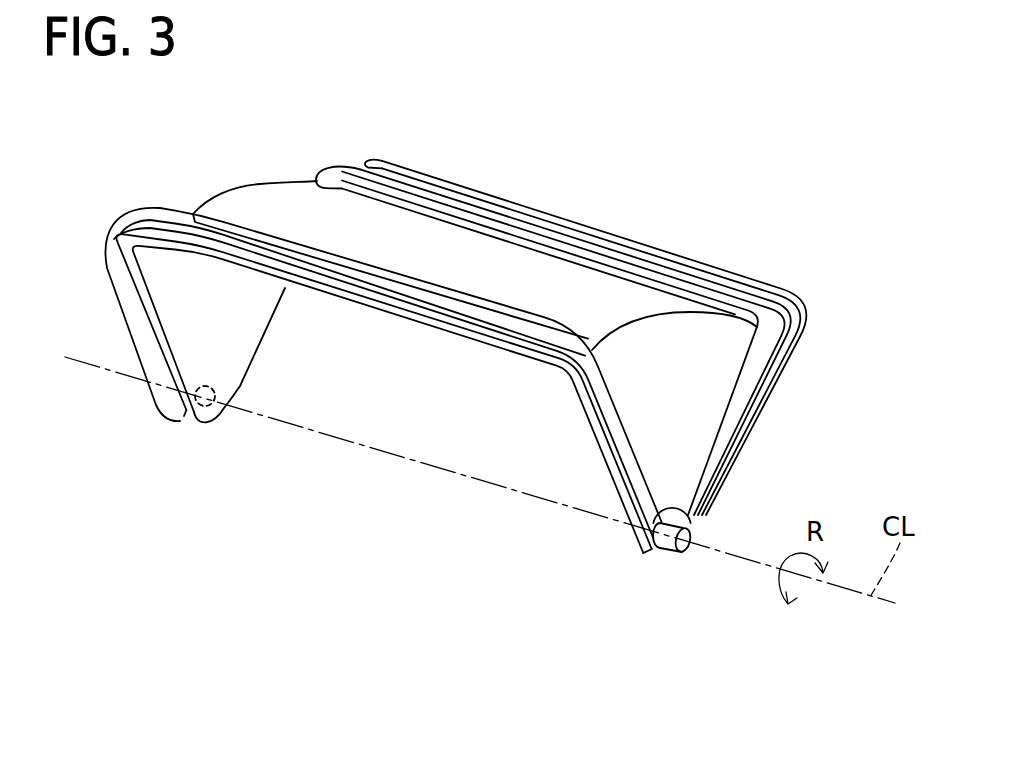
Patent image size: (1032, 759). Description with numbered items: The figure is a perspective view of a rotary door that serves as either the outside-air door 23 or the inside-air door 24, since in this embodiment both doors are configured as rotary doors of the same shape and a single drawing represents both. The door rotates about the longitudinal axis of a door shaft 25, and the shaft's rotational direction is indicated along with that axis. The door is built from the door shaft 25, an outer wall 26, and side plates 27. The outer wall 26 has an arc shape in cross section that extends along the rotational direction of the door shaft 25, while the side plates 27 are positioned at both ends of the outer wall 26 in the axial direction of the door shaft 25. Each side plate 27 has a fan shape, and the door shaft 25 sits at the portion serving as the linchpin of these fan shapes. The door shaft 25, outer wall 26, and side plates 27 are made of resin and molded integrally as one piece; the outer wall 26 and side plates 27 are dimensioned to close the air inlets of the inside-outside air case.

The outside-air door 23 is at (570, 190).
The inside-air door 24 is at (561, 300).
The door shaft 25 is at (219, 423).
The outer wall 26 is at (360, 240).
The side plates 27 is at (213, 330).